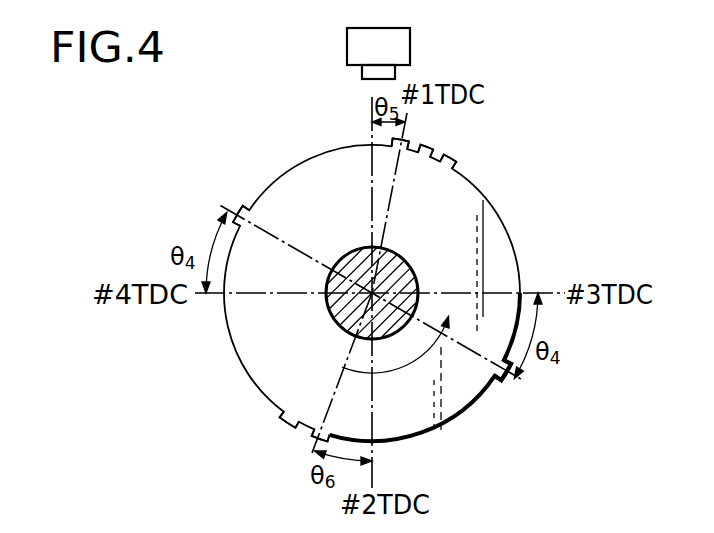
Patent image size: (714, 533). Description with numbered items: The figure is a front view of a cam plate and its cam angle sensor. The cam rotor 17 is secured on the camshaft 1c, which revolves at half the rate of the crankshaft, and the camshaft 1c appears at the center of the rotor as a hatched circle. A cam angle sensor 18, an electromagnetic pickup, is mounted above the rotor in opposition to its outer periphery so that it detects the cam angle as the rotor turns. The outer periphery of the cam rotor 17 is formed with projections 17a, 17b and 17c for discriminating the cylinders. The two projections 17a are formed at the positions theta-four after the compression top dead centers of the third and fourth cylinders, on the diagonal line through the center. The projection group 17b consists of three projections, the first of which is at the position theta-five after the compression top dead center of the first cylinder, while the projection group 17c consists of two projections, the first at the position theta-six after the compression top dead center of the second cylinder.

The cam angle sensor 18 is at (410, 45).
The cam rotor 17 is at (507, 216).
The projections 17a is at (246, 208).
The projection group 17b is at (445, 152).
The projection group 17c is at (301, 437).
The camshaft 1c is at (332, 328).